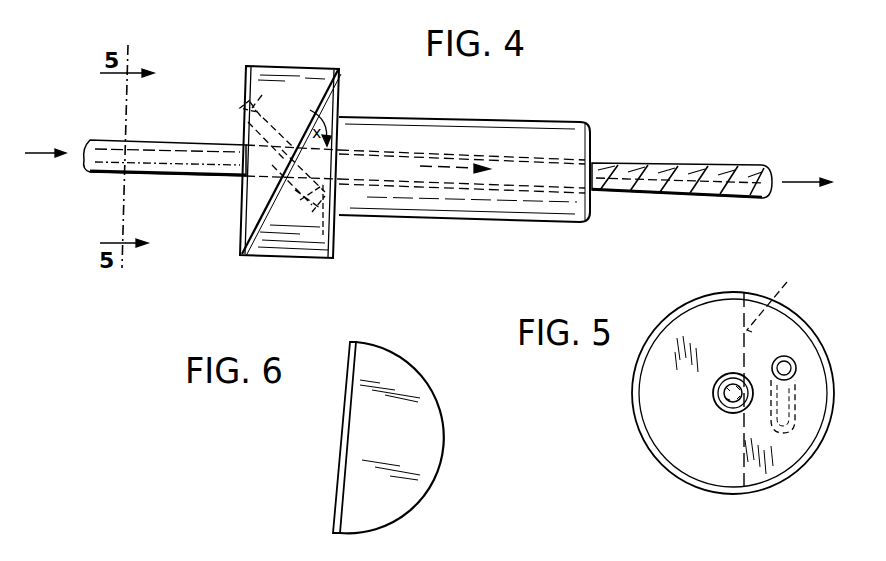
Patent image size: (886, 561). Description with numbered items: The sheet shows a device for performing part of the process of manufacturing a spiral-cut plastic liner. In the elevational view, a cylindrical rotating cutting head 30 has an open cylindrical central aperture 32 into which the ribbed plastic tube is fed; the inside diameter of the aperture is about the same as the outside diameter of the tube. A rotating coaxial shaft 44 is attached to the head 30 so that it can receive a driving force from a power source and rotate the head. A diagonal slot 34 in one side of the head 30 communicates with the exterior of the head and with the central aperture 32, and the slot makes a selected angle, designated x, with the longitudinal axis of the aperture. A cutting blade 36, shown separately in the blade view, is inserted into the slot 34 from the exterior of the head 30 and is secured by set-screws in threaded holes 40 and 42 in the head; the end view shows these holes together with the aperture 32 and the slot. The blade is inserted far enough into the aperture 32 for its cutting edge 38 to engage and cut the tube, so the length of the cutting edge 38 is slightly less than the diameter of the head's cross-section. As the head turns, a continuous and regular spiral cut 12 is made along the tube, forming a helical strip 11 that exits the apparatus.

In FIG. 4, the helical strip 11 is at (146, 141).
In FIG. 5, the helical strip 11 is at (713, 393).
In FIG. 4, the spiral cut 12 is at (695, 174).
In FIG. 4, the cutting head 30 is at (305, 66).
In FIG. 5, the cutting head 30 is at (712, 296).
In FIG. 5, the central aperture 32 is at (720, 410).
In FIG. 4, the diagonal slot 34 is at (262, 228).
In FIG. 6, the cutting blade 36 is at (440, 404).
In FIG. 5, the cutting edge 38 is at (778, 376).
In FIG. 6, the cutting edge 38 is at (340, 431).
In FIG. 4, the threaded hole 40 is at (248, 116).
In FIG. 5, the threaded hole 40 is at (788, 368).
In FIG. 4, the threaded hole 42 is at (335, 240).
In FIG. 5, the threaded hole 42 is at (795, 426).
In FIG. 4, the coaxial shaft 44 is at (482, 222).